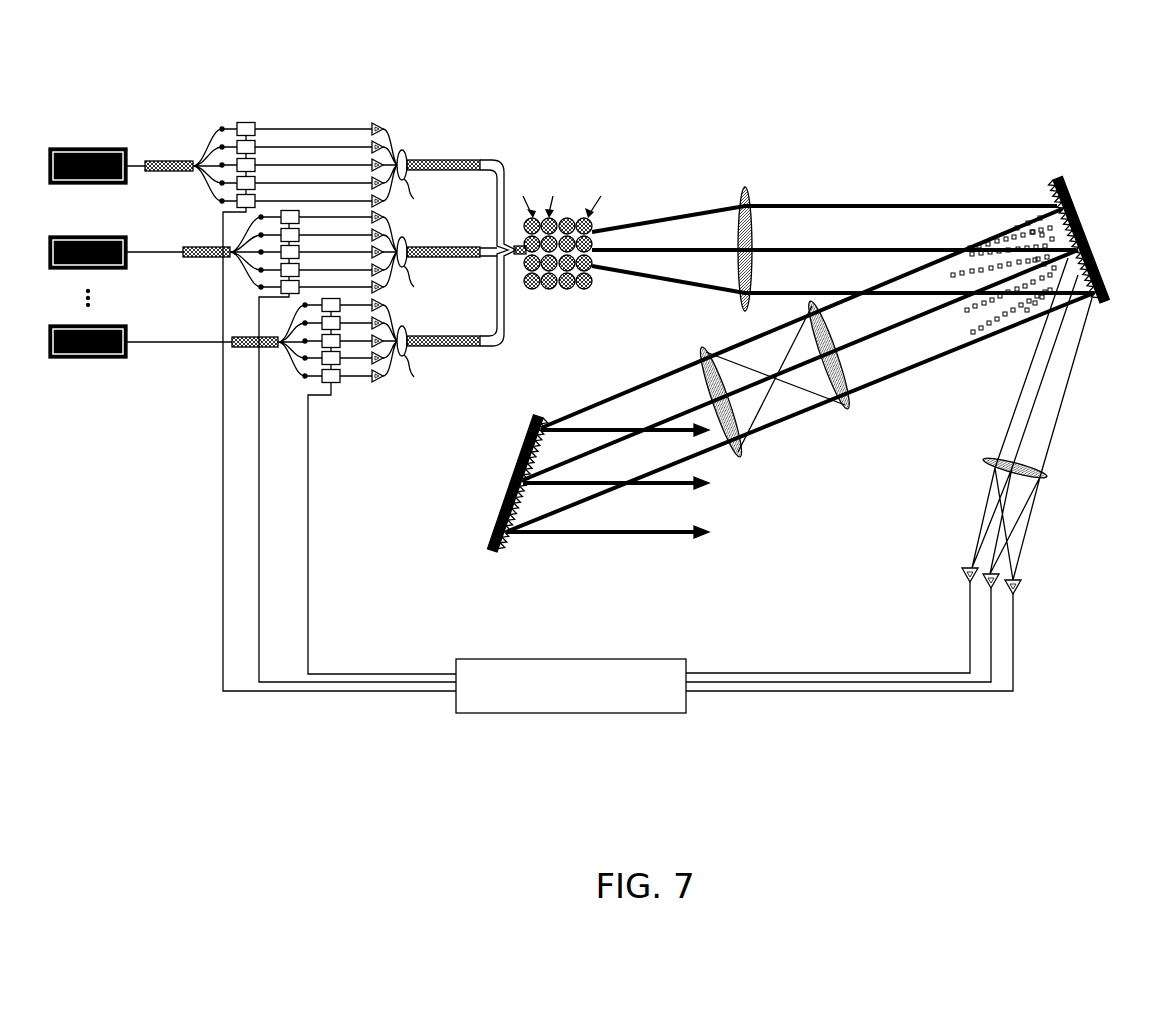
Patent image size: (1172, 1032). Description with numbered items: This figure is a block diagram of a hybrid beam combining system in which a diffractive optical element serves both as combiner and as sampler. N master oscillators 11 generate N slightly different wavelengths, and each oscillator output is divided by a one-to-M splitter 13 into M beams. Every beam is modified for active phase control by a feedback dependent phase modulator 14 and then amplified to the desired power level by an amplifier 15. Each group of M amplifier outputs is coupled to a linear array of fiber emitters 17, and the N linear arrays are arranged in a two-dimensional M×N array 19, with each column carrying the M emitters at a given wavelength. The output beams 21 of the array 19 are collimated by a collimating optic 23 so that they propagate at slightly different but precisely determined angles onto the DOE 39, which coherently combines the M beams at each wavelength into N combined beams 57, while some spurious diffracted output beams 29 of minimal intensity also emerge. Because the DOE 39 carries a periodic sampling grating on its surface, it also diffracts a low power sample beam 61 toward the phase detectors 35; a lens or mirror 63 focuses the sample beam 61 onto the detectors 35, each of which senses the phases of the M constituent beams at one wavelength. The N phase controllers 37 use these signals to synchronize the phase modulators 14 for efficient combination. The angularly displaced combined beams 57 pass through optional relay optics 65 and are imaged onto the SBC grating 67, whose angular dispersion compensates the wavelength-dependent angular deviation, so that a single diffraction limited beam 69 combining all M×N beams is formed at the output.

The master oscillators 11 is at (50, 118).
The 1:M splitters 13 is at (152, 172).
The phase modulators 14 is at (273, 209).
The amplifiers 15 is at (358, 113).
The fiber emitters 17 is at (470, 158).
The M×N array 19 is at (526, 299).
The output beams 21 is at (677, 203).
The collimating optic 23 is at (746, 187).
The spurious diffracted output beams 29 is at (1032, 226).
The phase detectors 35 is at (1030, 598).
The phase controllers 37 is at (593, 714).
The DOE 39 is at (1055, 178).
The combined beams 57 is at (922, 372).
The sample beam 61 is at (1060, 394).
The lens or mirror 63 is at (1048, 470).
The relay optics 65 is at (857, 425).
The SBC grating 67 is at (516, 480).
The single diffraction limited beam 69 is at (724, 511).